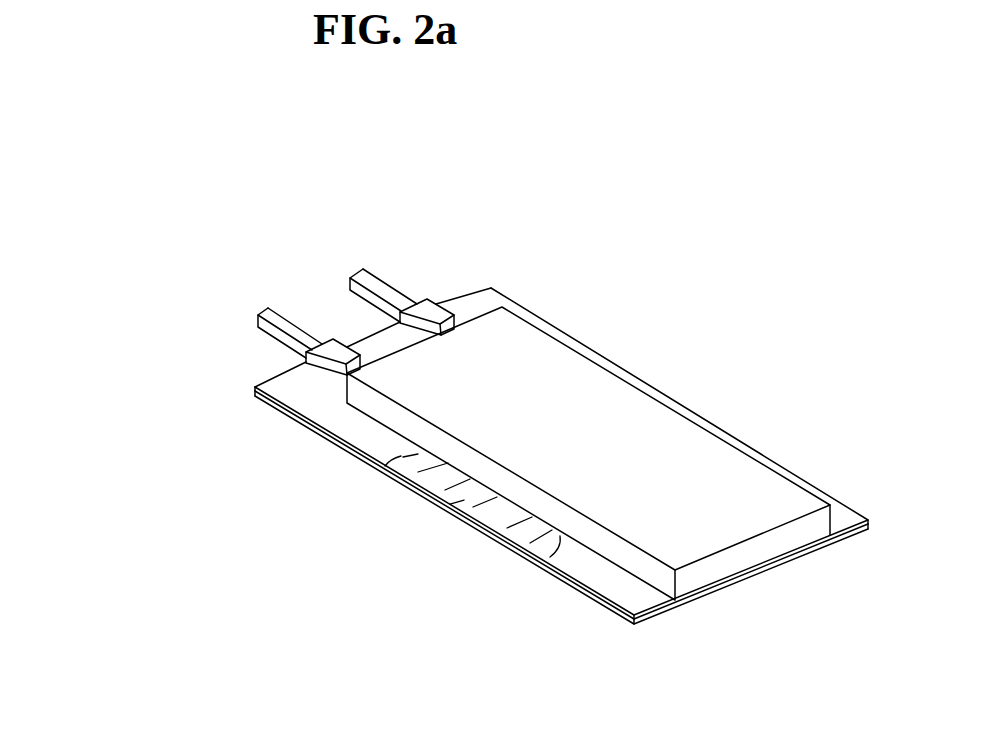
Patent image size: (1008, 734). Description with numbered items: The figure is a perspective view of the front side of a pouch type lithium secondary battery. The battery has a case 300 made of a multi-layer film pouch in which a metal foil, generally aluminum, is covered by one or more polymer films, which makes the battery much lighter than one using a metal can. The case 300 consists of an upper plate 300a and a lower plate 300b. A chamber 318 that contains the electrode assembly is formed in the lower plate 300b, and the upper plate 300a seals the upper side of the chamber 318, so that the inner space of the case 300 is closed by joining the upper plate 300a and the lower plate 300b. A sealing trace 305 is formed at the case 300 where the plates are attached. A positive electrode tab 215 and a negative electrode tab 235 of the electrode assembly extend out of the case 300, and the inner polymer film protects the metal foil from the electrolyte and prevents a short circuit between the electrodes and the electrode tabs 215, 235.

The positive electrode tab 215 is at (275, 313).
The negative electrode tab 235 is at (362, 269).
The case 300 is at (456, 456).
The upper plate 300a is at (259, 396).
The lower plate 300b is at (257, 389).
The sealing trace 305 is at (448, 504).
The chamber 318 is at (660, 428).